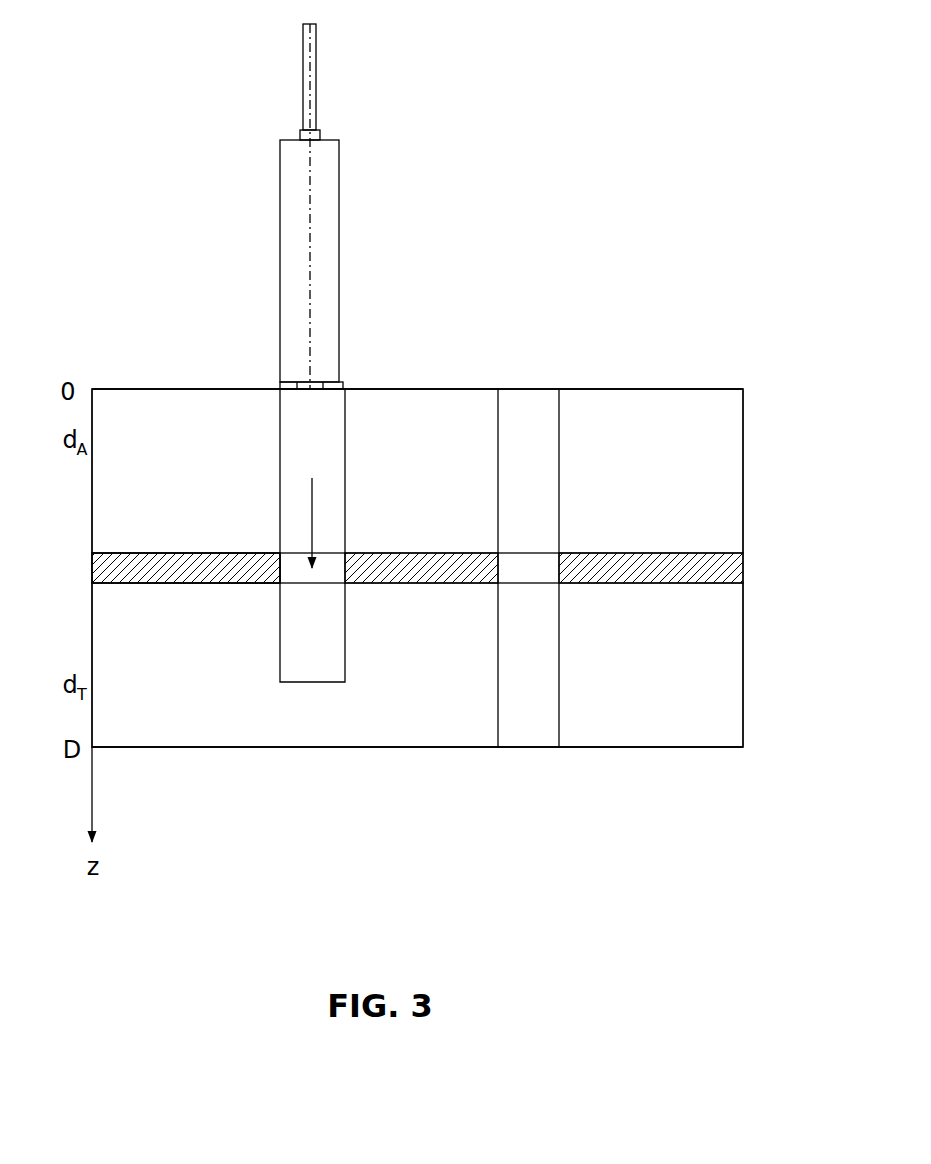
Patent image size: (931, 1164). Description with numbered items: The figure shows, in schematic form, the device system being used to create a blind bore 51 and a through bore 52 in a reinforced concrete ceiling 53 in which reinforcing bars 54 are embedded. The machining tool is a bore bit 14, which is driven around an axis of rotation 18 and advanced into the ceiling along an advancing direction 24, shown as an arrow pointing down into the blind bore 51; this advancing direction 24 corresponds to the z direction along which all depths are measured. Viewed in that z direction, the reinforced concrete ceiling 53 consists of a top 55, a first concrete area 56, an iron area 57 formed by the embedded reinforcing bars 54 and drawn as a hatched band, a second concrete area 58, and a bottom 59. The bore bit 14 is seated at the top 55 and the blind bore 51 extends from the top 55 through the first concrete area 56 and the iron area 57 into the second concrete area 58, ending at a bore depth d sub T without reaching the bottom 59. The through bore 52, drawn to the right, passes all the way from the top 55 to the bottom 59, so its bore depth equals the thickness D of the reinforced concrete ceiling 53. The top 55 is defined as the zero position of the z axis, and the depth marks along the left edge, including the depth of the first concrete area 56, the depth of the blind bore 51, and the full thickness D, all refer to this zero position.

The bore bit 14 is at (339, 222).
The axis of rotation 18 is at (318, 304).
The advancing direction 24 is at (315, 519).
The blind bore 51 is at (314, 684).
The through bore 52 is at (532, 748).
The reinforced concrete ceiling 53 is at (146, 388).
The reinforcing bars 54 is at (135, 573).
The top 55 is at (688, 387).
The first concrete area 56 is at (724, 464).
The iron area 57 is at (728, 564).
The second concrete area 58 is at (724, 679).
The bottom 59 is at (690, 749).